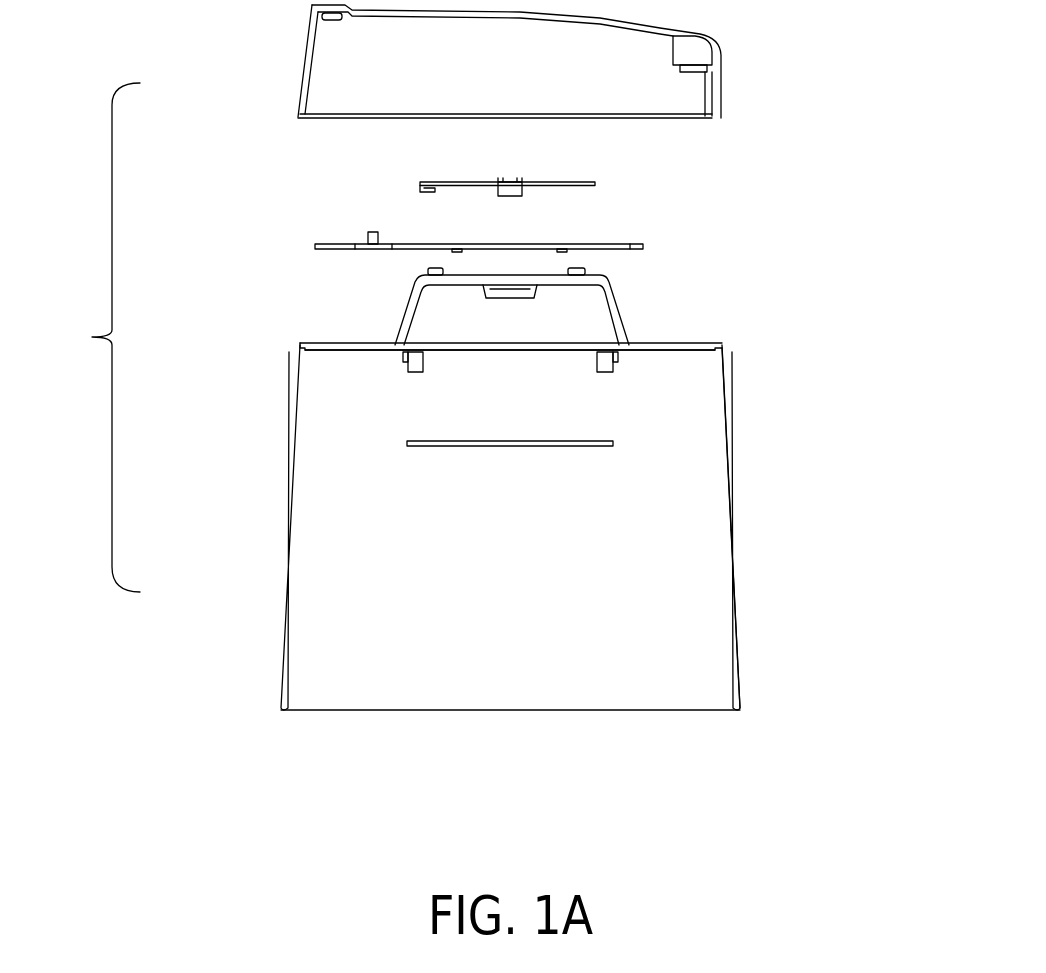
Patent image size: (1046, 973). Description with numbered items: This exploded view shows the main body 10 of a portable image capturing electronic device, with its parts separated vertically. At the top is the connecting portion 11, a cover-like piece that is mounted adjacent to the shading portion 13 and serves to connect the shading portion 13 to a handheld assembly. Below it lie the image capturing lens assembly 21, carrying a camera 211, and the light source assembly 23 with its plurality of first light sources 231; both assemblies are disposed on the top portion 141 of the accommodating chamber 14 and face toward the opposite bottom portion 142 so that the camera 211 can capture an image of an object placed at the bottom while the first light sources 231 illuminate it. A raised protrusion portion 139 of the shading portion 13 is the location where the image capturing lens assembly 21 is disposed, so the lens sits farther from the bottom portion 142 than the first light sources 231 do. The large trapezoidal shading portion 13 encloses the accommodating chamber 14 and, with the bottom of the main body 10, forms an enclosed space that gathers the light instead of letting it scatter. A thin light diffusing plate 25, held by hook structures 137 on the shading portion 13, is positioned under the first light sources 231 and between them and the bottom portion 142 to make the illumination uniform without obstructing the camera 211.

The main body 10 is at (95, 337).
The connecting portion 11 is at (317, 59).
The shading portion 13 is at (320, 558).
The accommodating chamber 14 is at (671, 549).
The hook structure 137 is at (402, 360).
The protrusion portion 139 is at (613, 318).
The top portion 141 is at (782, 311).
The bottom portion 142 is at (781, 638).
The image capturing lens assembly 21 is at (595, 183).
The camera 211 is at (512, 190).
The light source assembly 23 is at (645, 247).
The first light sources 231 is at (560, 250).
The light diffusing plate 25 is at (613, 443).